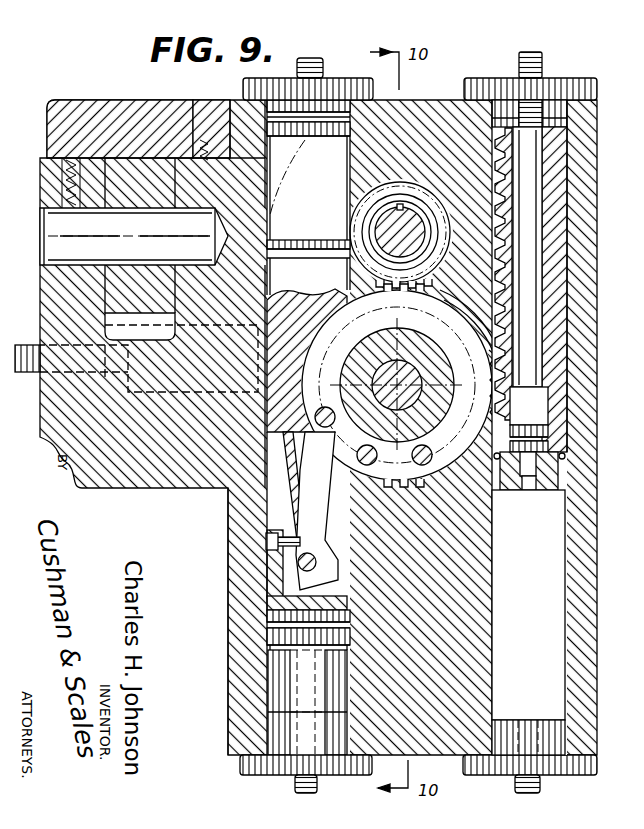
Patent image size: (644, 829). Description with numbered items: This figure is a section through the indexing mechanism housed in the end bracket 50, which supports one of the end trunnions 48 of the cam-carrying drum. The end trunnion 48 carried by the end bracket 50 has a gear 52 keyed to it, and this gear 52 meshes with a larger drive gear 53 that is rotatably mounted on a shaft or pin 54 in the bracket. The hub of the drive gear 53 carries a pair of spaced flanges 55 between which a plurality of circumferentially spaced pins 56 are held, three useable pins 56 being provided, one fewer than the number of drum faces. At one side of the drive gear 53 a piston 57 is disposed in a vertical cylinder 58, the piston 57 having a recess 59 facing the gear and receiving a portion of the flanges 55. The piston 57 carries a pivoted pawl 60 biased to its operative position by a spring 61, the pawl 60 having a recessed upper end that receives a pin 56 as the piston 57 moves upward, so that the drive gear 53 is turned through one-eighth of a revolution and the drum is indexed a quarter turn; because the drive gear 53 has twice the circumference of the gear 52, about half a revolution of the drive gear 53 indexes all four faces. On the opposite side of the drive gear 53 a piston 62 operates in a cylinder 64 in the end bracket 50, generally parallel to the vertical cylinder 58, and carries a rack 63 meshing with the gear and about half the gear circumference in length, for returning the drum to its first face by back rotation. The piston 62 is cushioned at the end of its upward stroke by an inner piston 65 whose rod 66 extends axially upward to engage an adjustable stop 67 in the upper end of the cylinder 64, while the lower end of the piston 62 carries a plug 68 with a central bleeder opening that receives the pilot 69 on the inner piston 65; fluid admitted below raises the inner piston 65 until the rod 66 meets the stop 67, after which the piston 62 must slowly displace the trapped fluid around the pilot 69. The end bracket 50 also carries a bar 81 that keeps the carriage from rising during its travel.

The end trunnion 48 is at (383, 222).
The end bracket 50 is at (188, 482).
The gear 52 is at (355, 258).
The drive gear 53 is at (415, 293).
The shaft or pin 54 is at (410, 384).
The flanges 55 is at (350, 477).
The pins 56 is at (333, 424).
The piston 57 is at (300, 270).
The vertical cylinder 58 is at (240, 580).
The recess 59 is at (330, 313).
The pivoted pawl 60 is at (306, 468).
The spring 61 is at (266, 543).
The piston 62 is at (555, 188).
The rack 63 is at (488, 307).
The cylinder 64 is at (568, 556).
The inner piston 65 is at (550, 444).
The rod 66 is at (546, 291).
The adjustable stop 67 is at (570, 113).
The plug 68 is at (545, 478).
The pilot 69 is at (528, 490).
The bar 81 is at (125, 283).